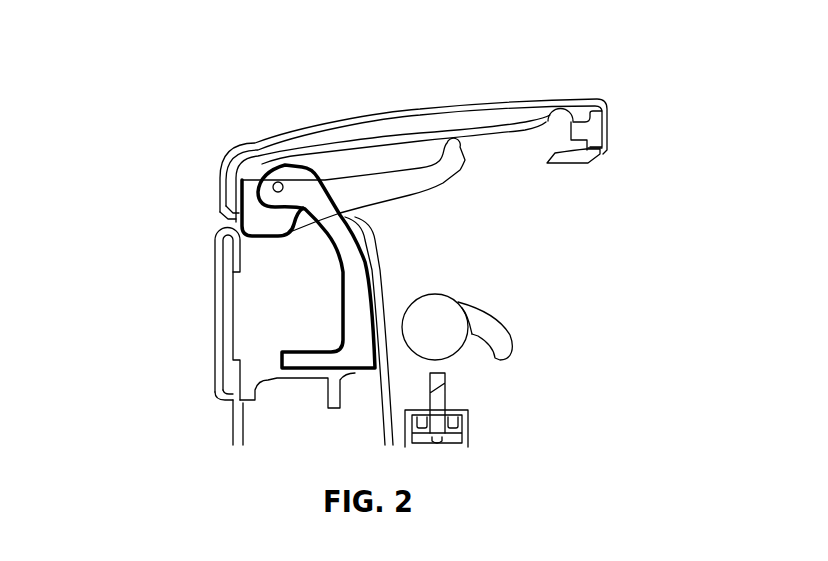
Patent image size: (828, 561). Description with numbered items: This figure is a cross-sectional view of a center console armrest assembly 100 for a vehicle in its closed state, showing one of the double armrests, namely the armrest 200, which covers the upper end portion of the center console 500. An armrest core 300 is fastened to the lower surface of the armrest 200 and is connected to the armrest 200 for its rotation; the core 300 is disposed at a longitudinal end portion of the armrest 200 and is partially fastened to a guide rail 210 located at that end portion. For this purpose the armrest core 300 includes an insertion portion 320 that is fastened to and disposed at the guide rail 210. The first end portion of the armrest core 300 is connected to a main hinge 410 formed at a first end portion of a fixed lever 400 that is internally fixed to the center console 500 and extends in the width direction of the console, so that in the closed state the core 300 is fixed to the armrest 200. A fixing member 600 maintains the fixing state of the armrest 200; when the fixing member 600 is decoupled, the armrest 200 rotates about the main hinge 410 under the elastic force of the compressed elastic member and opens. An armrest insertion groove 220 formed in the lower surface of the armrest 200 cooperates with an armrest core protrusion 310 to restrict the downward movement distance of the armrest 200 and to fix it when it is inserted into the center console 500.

The center console armrest assembly 100 is at (340, 35).
The armrest 200 is at (535, 97).
The guide rail 210 is at (402, 114).
The armrest insertion groove 220 is at (575, 116).
The armrest core 300 is at (423, 192).
The armrest core protrusion 310 is at (460, 177).
The insertion portion 320 is at (472, 147).
The fixed lever 400 is at (353, 332).
The main hinge 410 is at (278, 181).
The center console 500 is at (214, 285).
The fixing member 600 is at (453, 323).